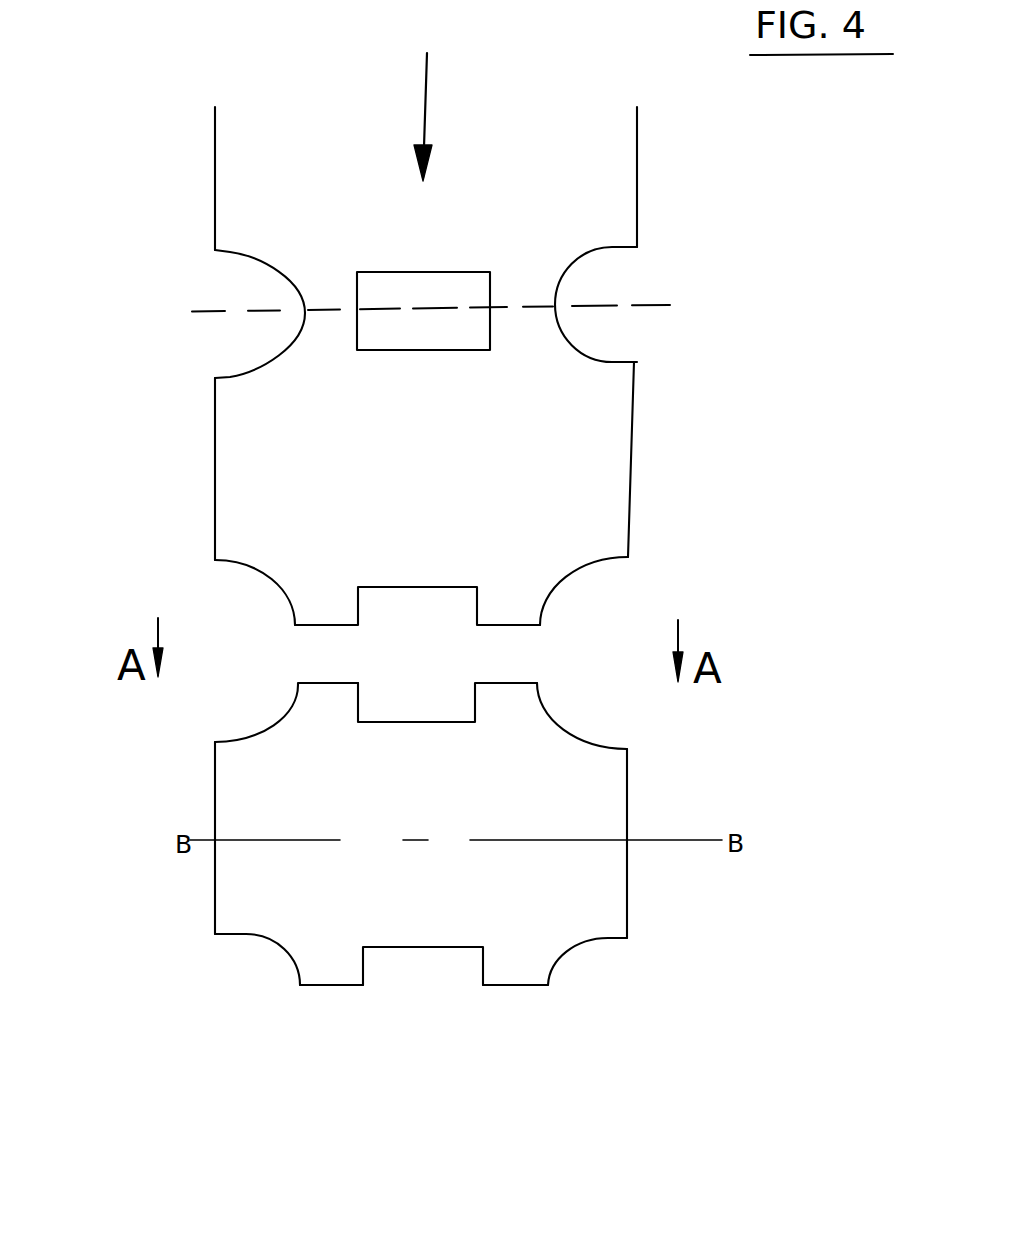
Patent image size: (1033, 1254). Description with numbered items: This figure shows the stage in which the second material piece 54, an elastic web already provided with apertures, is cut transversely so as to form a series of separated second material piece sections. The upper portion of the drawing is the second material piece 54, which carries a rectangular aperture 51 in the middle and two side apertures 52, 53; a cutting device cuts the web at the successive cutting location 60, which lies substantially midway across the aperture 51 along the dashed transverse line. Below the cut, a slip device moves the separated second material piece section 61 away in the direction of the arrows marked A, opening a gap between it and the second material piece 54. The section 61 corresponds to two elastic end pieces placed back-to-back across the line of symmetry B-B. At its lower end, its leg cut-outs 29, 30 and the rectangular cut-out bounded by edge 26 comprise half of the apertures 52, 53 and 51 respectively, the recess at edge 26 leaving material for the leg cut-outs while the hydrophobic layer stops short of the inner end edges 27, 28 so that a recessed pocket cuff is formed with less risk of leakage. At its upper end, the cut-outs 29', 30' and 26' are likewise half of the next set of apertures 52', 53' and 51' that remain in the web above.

The second material piece 54 is at (585, 172).
The aperture 51 is at (547, 266).
The cutting location 60 is at (651, 305).
The aperture 52 is at (652, 321).
The aperture 53 is at (197, 342).
The aperture 51' is at (530, 548).
The aperture 52' is at (656, 590).
The aperture 53' is at (173, 592).
The leg cut-out 29' is at (686, 704).
The second material piece section 61 is at (573, 797).
The leg cut-out 30' is at (213, 733).
The rectangular cut-out 26' is at (308, 774).
The leg cut-out 30 is at (224, 1003).
The inner end edge 28 is at (327, 987).
The rectangular cut-out edge 26 is at (473, 1040).
The inner end edge 27 is at (527, 992).
The leg cut-out 29 is at (634, 981).